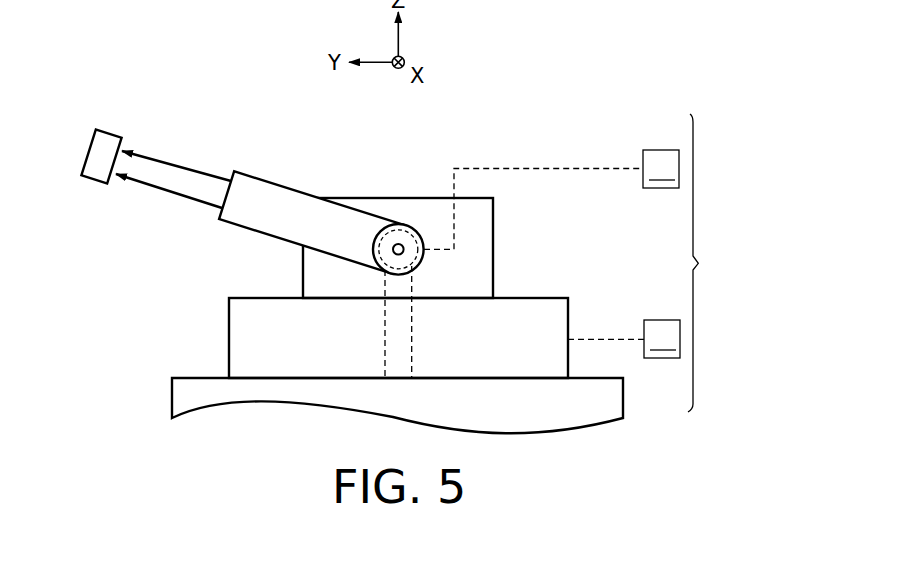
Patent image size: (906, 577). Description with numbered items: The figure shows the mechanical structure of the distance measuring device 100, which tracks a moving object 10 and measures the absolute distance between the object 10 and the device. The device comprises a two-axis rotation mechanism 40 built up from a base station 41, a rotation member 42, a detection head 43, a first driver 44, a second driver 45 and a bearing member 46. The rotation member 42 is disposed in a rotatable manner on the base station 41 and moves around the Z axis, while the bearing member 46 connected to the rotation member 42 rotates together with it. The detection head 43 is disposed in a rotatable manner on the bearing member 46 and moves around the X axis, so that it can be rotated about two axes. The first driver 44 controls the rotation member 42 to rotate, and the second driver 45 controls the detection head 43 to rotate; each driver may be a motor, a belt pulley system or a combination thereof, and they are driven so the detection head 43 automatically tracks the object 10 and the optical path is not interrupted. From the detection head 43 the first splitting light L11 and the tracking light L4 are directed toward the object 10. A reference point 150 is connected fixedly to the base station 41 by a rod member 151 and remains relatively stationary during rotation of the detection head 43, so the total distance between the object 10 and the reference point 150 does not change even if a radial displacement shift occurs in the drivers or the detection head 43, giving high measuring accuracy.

The object 10 is at (110, 128).
The tracking light L4 is at (215, 177).
The first splitting light L11 is at (165, 190).
The detection head 43 is at (343, 222).
The reference point 150 is at (408, 228).
The rod member 151 is at (398, 330).
The second driver 45 is at (551, 199).
The bearing member 46 is at (480, 227).
The rotation member 42 is at (570, 318).
The first driver 44 is at (624, 339).
The base station 41 is at (610, 398).
The two-axis rotation mechanism 40 is at (709, 263).
The distance measuring device 100 is at (479, 82).